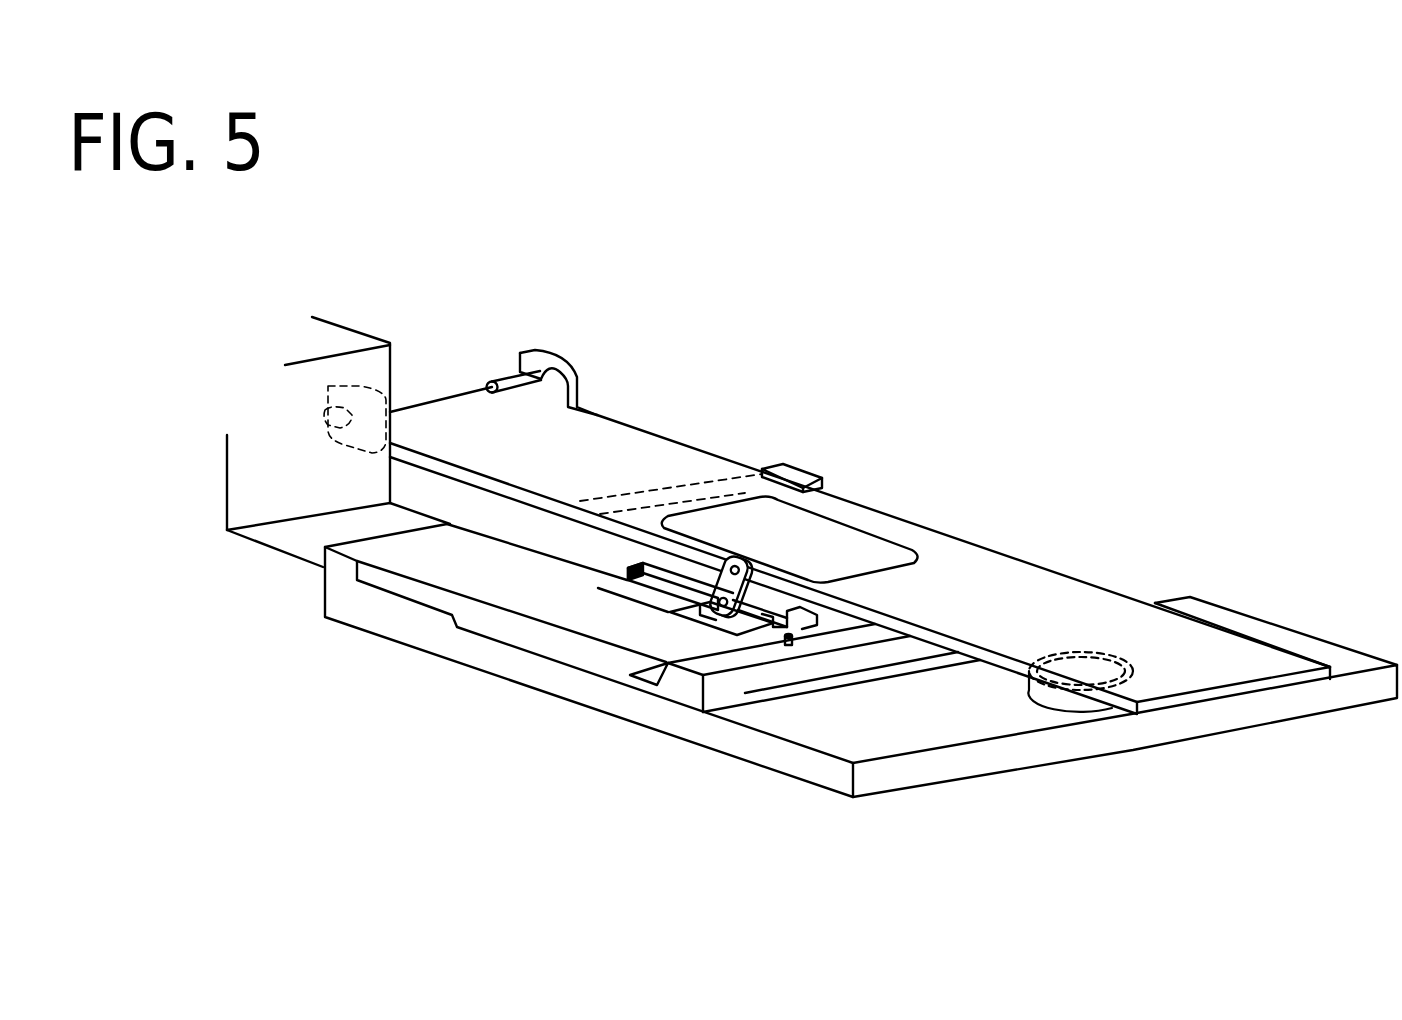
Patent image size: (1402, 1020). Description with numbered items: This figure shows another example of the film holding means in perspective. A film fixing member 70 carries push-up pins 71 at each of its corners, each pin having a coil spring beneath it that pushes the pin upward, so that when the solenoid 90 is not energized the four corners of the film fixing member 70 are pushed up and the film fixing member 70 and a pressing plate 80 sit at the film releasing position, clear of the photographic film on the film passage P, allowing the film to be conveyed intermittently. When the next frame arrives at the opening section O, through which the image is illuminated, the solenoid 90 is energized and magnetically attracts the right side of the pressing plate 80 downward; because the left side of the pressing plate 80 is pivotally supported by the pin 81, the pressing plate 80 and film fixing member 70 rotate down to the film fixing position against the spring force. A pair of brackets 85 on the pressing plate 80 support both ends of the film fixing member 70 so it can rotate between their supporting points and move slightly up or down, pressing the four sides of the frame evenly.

The film fixing member 70 is at (808, 614).
The push-up pins 71 is at (628, 579).
The pressing plate 80 is at (1010, 582).
The pin 81 is at (510, 378).
The brackets 85 is at (740, 558).
The solenoid 90 is at (1053, 698).
The opening section O is at (858, 551).
The film passage P is at (520, 640).